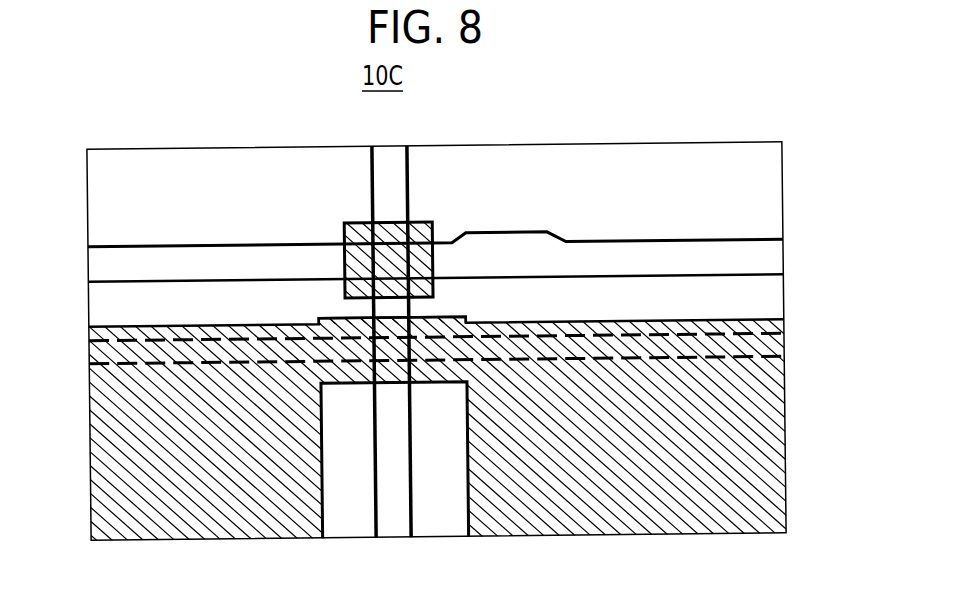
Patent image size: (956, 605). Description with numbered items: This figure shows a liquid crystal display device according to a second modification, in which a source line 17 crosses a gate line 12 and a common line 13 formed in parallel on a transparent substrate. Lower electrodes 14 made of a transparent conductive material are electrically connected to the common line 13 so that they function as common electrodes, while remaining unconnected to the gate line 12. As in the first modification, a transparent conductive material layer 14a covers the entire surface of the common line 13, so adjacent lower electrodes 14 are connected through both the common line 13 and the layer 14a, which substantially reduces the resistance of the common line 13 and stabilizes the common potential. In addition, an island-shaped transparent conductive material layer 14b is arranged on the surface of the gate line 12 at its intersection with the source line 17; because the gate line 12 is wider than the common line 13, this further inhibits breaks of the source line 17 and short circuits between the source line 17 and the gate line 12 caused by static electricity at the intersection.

The gate line 12 is at (722, 256).
The common line 13 is at (503, 327).
The lower electrode 14 is at (132, 483).
The transparent conductive material layer 14a is at (343, 330).
The transparent conductive material layer 14b is at (433, 222).
The source line 17 is at (390, 478).